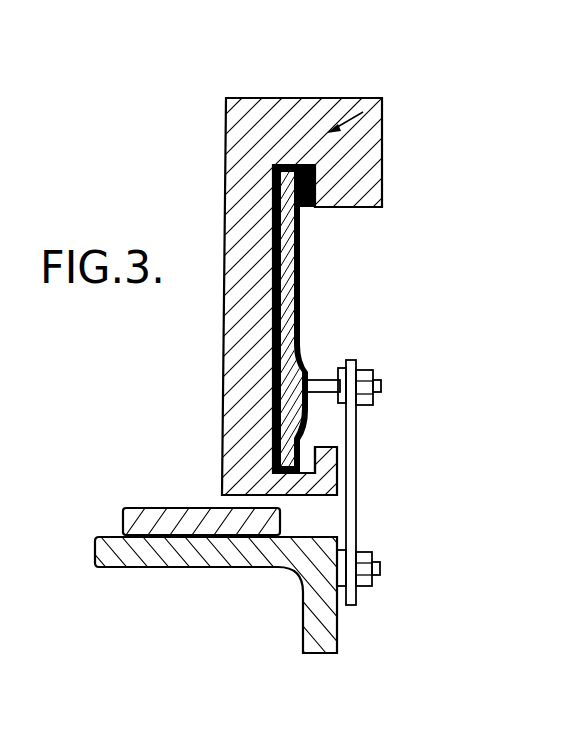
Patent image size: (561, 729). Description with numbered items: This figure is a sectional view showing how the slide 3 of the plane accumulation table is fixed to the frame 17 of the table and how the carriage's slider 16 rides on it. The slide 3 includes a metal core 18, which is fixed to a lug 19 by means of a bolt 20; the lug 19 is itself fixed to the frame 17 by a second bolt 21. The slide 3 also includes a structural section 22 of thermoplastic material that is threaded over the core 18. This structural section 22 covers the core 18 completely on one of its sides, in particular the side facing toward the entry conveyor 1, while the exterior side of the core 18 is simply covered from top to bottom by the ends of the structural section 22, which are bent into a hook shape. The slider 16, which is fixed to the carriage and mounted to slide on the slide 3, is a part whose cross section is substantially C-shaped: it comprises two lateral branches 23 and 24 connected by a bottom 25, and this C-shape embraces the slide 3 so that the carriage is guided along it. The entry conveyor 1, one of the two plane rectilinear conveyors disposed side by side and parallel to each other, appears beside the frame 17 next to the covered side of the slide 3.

The rectilinear conveyor 1 is at (143, 520).
The slide 3 is at (289, 319).
The slider 16 is at (280, 251).
The frame 17 is at (212, 547).
The metal core 18 is at (299, 285).
The lug 19 is at (353, 455).
The bolt 20 is at (375, 372).
The bolt 21 is at (374, 572).
The thermoplastic material structural section 22 is at (302, 383).
The lateral branch 23 is at (290, 115).
The lateral branch 24 is at (283, 480).
The bottom 25 is at (243, 330).